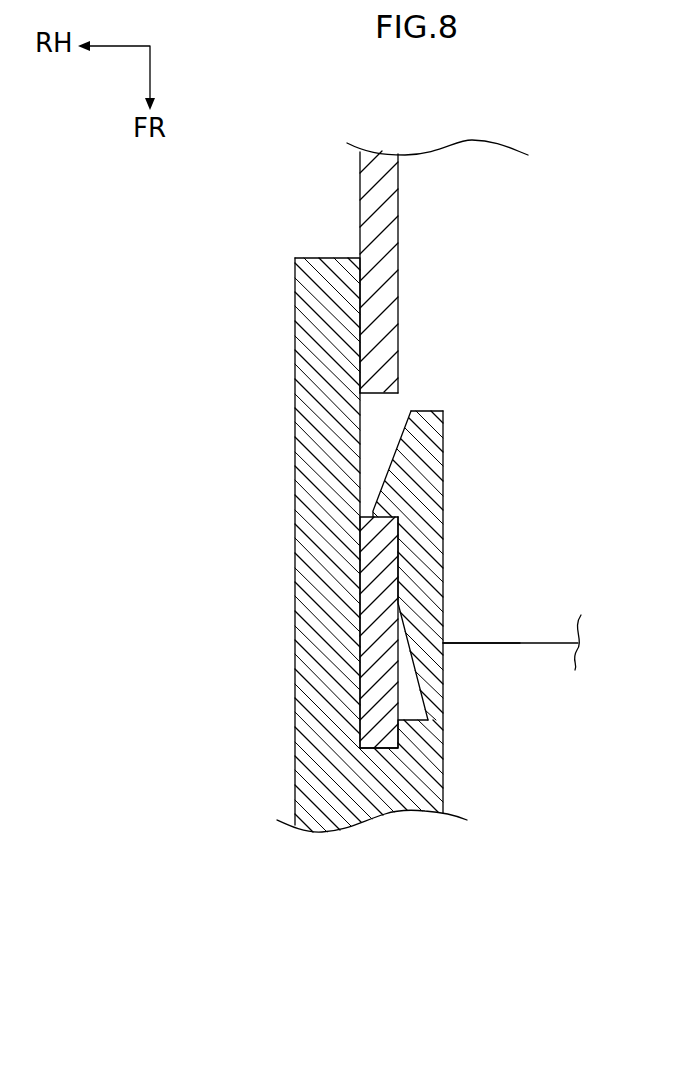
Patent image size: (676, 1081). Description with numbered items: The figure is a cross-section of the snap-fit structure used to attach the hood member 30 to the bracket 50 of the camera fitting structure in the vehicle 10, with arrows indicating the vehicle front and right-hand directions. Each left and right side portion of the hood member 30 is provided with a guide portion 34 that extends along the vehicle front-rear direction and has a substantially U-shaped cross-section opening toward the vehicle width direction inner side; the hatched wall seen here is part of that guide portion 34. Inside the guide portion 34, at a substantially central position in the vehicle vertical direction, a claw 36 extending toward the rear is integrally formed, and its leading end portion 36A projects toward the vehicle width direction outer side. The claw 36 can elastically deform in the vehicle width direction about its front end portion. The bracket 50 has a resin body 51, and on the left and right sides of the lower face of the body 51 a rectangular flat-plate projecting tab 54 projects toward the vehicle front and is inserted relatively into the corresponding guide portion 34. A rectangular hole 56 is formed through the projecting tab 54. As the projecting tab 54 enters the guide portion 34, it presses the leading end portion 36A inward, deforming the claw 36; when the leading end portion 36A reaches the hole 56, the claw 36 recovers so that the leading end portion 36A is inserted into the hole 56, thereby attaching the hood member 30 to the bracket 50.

The vehicle 10 is at (255, 850).
The hood member 30 is at (290, 645).
The guide portion 34 is at (295, 715).
The claw 36 is at (443, 467).
The leading end portion 36A is at (375, 485).
The bracket 50 is at (545, 652).
The body 51 is at (478, 627).
The projecting tab 54 is at (360, 208).
The hole 56 is at (390, 393).